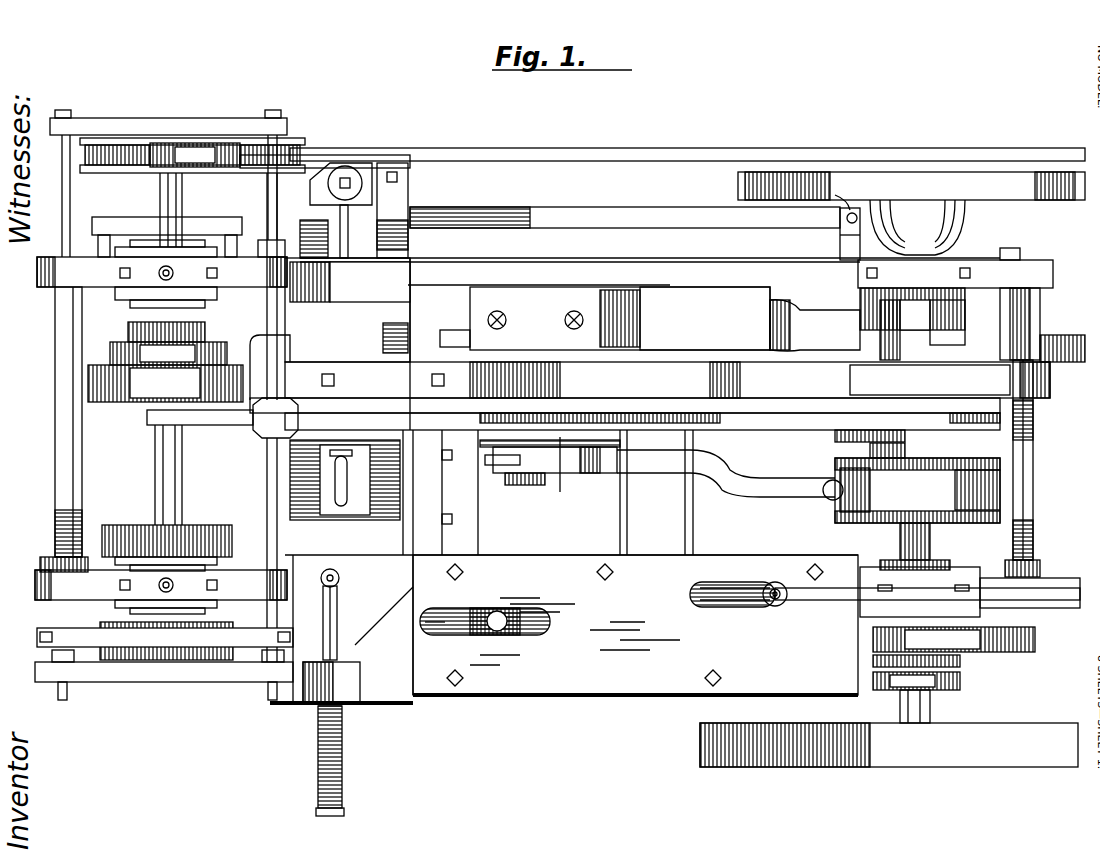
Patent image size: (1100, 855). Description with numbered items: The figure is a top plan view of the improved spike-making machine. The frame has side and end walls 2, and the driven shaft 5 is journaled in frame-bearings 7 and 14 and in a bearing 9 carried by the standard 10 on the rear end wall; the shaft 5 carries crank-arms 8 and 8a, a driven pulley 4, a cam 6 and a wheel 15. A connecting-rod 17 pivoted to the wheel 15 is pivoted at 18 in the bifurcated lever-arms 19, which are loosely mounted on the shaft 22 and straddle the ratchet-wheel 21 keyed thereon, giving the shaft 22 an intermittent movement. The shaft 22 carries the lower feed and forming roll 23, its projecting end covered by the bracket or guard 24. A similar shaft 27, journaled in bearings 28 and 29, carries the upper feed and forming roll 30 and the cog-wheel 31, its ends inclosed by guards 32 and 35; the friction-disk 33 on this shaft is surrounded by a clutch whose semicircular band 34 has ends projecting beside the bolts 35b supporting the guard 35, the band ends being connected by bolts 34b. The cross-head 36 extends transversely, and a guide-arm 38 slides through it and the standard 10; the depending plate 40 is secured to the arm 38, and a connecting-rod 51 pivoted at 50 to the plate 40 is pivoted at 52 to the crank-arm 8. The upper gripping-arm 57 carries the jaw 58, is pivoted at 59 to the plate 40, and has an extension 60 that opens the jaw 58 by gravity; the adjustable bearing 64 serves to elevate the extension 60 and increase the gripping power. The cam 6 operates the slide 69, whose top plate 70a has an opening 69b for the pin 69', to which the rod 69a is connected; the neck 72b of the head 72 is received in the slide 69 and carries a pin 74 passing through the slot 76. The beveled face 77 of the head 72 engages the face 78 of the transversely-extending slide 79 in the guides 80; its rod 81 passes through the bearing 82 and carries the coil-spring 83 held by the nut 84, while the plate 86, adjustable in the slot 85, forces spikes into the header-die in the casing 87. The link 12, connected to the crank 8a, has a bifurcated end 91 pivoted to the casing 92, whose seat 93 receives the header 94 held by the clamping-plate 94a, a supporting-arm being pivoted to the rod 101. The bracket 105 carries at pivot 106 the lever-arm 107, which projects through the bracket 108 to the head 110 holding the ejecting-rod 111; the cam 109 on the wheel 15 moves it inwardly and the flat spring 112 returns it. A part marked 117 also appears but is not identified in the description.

The side and end walls 2 is at (58, 450).
The driven pulley 4 is at (889, 745).
The driven shaft 5 is at (932, 703).
The cam 6 is at (1005, 640).
The frame-bearing 7 is at (958, 575).
The crank-arm 8 is at (920, 470).
The crank-arm 8a is at (885, 330).
The bearing 9 is at (835, 438).
The standard 10 is at (1040, 358).
The link 12 is at (900, 315).
The frame-bearing 14 is at (950, 300).
The wheel 15 is at (940, 182).
The connecting-rod 17 is at (475, 152).
The pivot 18 is at (298, 160).
The bifurcated lever-arms 19 is at (113, 145).
The ratchet-wheel 21 is at (160, 148).
The shaft 22 is at (158, 193).
The lower feed and forming roll 23 is at (170, 135).
The bracket or guard 24 is at (90, 120).
The shaft 27 is at (183, 466).
The bearing 28 is at (145, 302).
The bearing 29 is at (155, 578).
The upper feed and forming roll 30 is at (128, 392).
The cog-wheel 31 is at (128, 525).
The guard 32 is at (190, 226).
The friction-disk 33 is at (135, 656).
The semicircular band 34 is at (255, 645).
The bolts 34b is at (42, 630).
The guard or bracket 35 is at (195, 682).
The bolts 35b is at (58, 682).
The cross-head 36 is at (268, 460).
The guide-arm 38 is at (210, 415).
The depending plate 40 is at (550, 471).
The pivot 50 is at (520, 486).
The connecting-rod 51 is at (745, 497).
The pivot 52 is at (828, 500).
The upper gripping-arm 57 is at (667, 380).
The jaw 58 is at (290, 362).
The pivot 59 is at (590, 398).
The extension 60 is at (930, 380).
The adjustable bearing 64 is at (1066, 348).
The slide 69 is at (890, 565).
The pin 69' is at (769, 568).
The rod 69a is at (1040, 600).
The opening 69b is at (732, 603).
The top plate 70a is at (564, 629).
The head 72 is at (343, 629).
The neck 72b is at (480, 612).
The pin 74 is at (500, 612).
The slot 76 is at (440, 632).
The beveled face 77 is at (372, 612).
The face 78 is at (343, 622).
The transversely-extending slide 79 is at (317, 575).
The guides 80 is at (425, 488).
The rod 81 is at (323, 605).
The bearing 82 is at (345, 690).
The coil-spring 83 is at (318, 722).
The nut 84 is at (318, 800).
The slot 85 is at (345, 505).
The plate 86 is at (408, 479).
The casing 87 is at (347, 344).
The bifurcated end 91 is at (815, 325).
The casing 92 is at (705, 318).
The seat 93 is at (458, 330).
The header 94 is at (405, 338).
The clamping-plate 94a is at (589, 317).
The rod 101 is at (685, 500).
The bracket 105 is at (840, 248).
The pivot 106 is at (855, 213).
The lever-arm 107 is at (530, 207).
The bracket 108 is at (400, 197).
The cam 109 is at (825, 192).
The head 110 is at (365, 175).
The ejecting-rod 111 is at (350, 240).
The flat spring 112 is at (185, 332).
The plate 117 is at (110, 350).